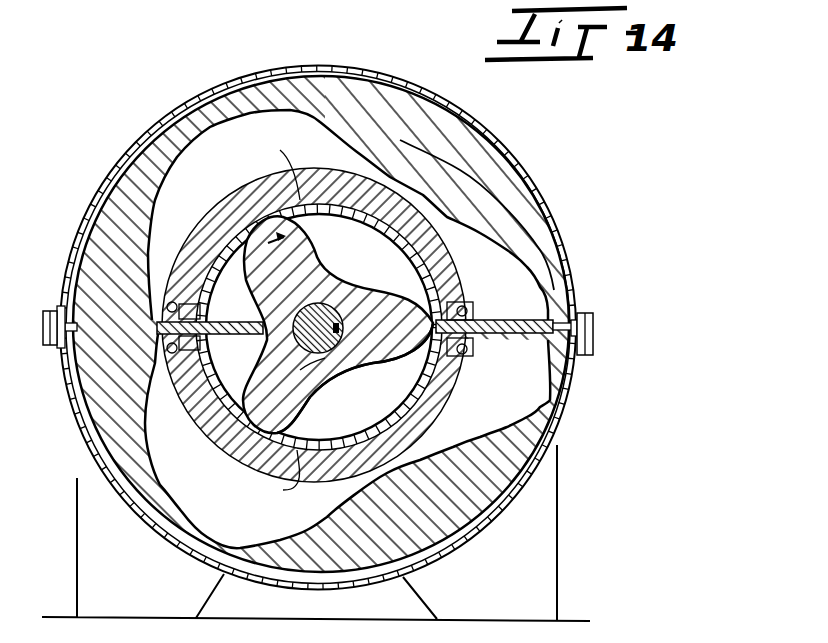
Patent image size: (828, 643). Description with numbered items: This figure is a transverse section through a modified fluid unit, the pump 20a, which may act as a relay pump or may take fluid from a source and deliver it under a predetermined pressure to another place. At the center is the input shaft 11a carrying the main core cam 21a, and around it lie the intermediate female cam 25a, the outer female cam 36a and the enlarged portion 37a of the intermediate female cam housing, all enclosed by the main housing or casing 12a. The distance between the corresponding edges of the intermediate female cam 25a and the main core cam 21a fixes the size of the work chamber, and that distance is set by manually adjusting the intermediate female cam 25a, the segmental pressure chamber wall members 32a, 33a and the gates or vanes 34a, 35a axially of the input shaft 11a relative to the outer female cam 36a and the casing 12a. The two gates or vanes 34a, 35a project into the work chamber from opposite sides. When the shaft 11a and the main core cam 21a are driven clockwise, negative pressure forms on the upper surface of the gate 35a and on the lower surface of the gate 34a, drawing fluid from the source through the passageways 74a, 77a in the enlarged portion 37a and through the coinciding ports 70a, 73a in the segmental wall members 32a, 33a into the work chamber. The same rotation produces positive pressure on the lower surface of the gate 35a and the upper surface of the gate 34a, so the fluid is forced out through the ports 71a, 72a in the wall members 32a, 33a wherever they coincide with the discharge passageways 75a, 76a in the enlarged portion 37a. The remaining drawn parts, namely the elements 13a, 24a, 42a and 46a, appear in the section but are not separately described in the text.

The input shaft 11a is at (322, 360).
The main housing or casing 12a is at (552, 190).
The support stand 13a is at (77, 585).
The pump 20a is at (560, 268).
The main core cam 21a is at (300, 279).
The housing ring 24a is at (317, 266).
The intermediate female cam 25a is at (363, 421).
The segmental pressure chamber wall member 32a is at (283, 490).
The segmental pressure chamber wall member 33a is at (280, 150).
The gate or vane 34a is at (528, 322).
The gate or vane 35a is at (202, 346).
The outer female cam 36a is at (443, 160).
The enlarged portion of the intermediate female cam housing 37a is at (438, 268).
The pocket cavity 42a is at (208, 182).
The drive shaft 46a is at (345, 336).
The port or passageway 70a is at (407, 377).
The passageway or port 71a is at (203, 362).
The passageway or port 72a is at (425, 286).
The port or passageway 73a is at (202, 312).
The passageway 74a is at (472, 356).
The passageway 75a is at (160, 355).
The passageway 76a is at (470, 304).
The passageway 77a is at (166, 303).